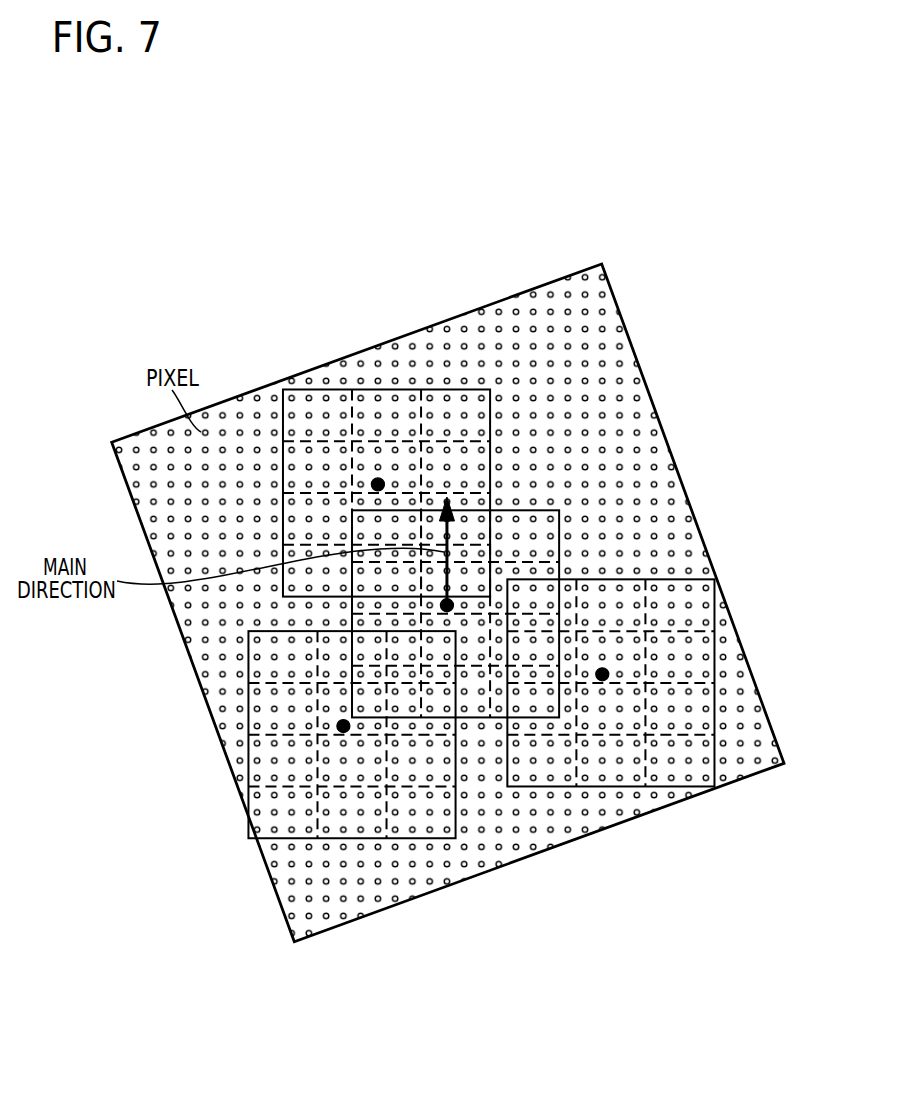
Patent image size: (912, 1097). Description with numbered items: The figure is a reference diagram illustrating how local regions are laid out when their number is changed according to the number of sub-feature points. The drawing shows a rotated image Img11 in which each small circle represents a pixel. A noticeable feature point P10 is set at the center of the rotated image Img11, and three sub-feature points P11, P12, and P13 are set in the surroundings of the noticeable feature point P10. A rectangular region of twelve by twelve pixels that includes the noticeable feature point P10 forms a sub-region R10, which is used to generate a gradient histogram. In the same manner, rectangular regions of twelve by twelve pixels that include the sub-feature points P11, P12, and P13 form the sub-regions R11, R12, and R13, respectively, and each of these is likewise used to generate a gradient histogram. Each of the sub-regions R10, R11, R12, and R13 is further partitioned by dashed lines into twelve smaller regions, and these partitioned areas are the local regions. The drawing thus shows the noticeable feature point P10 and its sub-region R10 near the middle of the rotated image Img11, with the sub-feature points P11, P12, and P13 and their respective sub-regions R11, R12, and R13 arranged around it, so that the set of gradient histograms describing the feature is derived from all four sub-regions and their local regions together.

The rotated image Img11 is at (266, 385).
The sub-region R10 is at (543, 510).
The sub-region R11 is at (491, 421).
The sub-region R12 is at (248, 648).
The sub-region R13 is at (715, 718).
The noticeable feature point P10 is at (440, 607).
The sub-feature point P11 is at (381, 479).
The sub-feature point P12 is at (338, 729).
The sub-feature point P13 is at (598, 679).